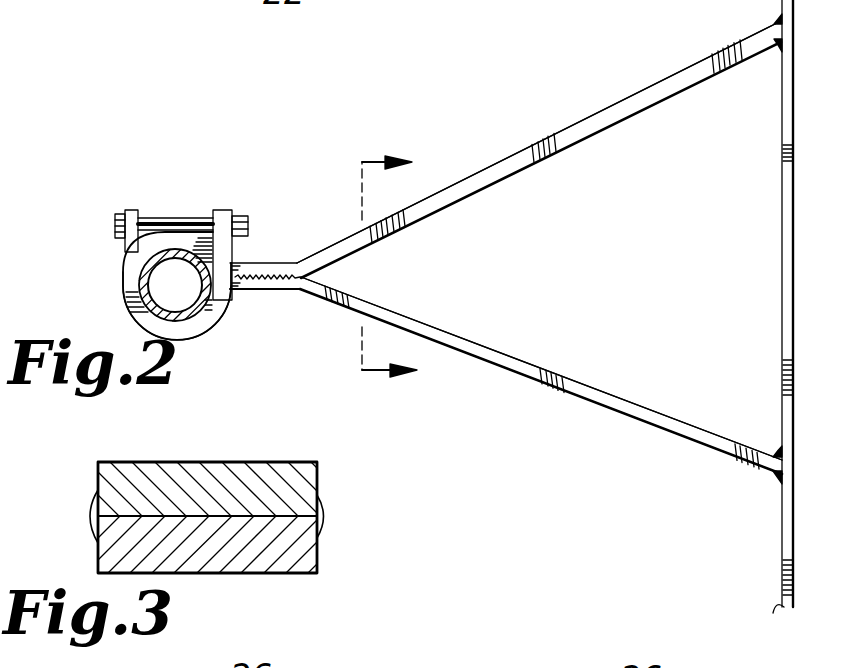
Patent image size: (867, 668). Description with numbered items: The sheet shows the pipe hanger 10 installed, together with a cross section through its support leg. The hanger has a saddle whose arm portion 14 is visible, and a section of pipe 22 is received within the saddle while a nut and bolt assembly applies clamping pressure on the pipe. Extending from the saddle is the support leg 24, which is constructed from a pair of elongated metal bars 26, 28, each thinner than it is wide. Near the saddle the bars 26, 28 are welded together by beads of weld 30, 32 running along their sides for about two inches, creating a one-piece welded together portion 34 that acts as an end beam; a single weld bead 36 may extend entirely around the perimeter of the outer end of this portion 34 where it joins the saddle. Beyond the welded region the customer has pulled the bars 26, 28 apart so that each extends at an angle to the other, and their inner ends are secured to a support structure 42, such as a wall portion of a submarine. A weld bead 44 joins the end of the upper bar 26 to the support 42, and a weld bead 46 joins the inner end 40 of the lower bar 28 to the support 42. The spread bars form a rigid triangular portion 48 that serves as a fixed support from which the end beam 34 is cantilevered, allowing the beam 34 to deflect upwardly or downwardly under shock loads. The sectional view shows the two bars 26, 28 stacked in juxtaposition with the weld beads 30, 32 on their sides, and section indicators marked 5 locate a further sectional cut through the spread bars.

In FIG. 2, the pipe hanger 10 is at (104, 304).
In FIG. 2, the arm portion 14 is at (127, 243).
In FIG. 2, the pipe 22 is at (142, 276).
In FIG. 2, the support leg 24 is at (482, 150).
In FIG. 3, the support leg 24 is at (80, 555).
In FIG. 2, the bar 26 is at (585, 125).
In FIG. 3, the bar 26 is at (233, 472).
In FIG. 2, the bar 28 is at (640, 412).
In FIG. 3, the bar 28 is at (262, 575).
In FIG. 2, the weld bead 30 is at (780, 22).
In FIG. 3, the weld bead 30 is at (92, 518).
In FIG. 3, the weld bead 32 is at (325, 520).
In FIG. 2, the welded together portion 34 is at (266, 255).
In FIG. 2, the weld bead 36 is at (238, 292).
In FIG. 2, the inner end 40 is at (770, 475).
In FIG. 2, the support structure 42 is at (780, 232).
In FIG. 2, the weld bead 44 is at (776, 44).
In FIG. 2, the weld bead 46 is at (780, 450).
In FIG. 2, the triangular portion 48 is at (532, 388).
In FIG. 2, the section line 5- 5 is at (401, 263).